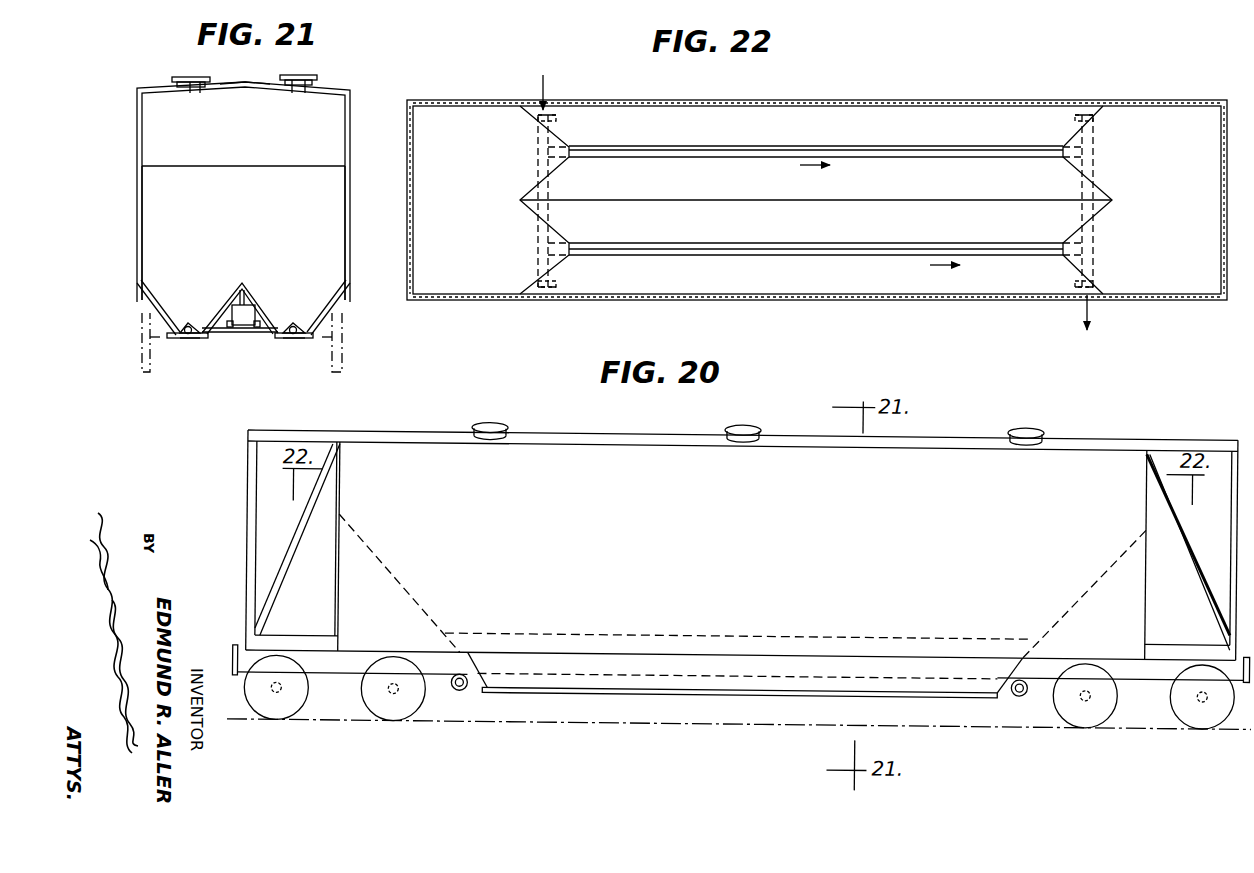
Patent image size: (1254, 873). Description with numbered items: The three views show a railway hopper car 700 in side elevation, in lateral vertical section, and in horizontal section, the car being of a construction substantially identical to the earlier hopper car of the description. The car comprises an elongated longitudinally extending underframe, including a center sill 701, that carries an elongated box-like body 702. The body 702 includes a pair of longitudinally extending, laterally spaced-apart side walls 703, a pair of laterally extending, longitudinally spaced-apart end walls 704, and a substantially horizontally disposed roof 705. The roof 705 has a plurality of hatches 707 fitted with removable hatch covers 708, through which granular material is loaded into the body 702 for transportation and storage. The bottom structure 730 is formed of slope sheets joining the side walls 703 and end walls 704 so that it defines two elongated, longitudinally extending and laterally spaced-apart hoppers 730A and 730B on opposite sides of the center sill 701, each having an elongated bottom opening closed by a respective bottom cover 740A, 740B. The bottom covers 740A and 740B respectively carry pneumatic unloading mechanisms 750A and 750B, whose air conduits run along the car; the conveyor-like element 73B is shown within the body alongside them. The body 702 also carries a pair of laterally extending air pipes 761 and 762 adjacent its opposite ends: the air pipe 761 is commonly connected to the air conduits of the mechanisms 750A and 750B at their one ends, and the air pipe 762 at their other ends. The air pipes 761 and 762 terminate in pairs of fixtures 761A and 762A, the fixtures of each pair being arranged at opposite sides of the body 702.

In FIG. 21, the railway hopper car 700 is at (400, 87).
In FIG. 22, the railway hopper car 700 is at (920, 92).
In FIG. 20, the railway hopper car 700 is at (1114, 407).
In FIG. 21, the center sill 701 is at (248, 335).
In FIG. 20, the center sill 701 is at (332, 667).
In FIG. 21, the body 702 is at (133, 197).
In FIG. 22, the body 702 is at (903, 306).
In FIG. 20, the body 702 is at (920, 460).
In FIG. 21, the side walls 703 is at (142, 226).
In FIG. 22, the side walls 703 is at (682, 102).
In FIG. 20, the side walls 703 is at (543, 442).
In FIG. 21, the end walls 704 is at (327, 147).
In FIG. 22, the end walls 704 is at (413, 200).
In FIG. 20, the end walls 704 is at (341, 591).
In FIG. 21, the roof 705 is at (250, 90).
In FIG. 21, the hatches 707 is at (197, 86).
In FIG. 21, the hatch covers 708 is at (190, 77).
In FIG. 22, the bottom structure 730 is at (655, 198).
In FIG. 21, the hopper 730A is at (188, 320).
In FIG. 22, the hopper 730A is at (765, 245).
In FIG. 21, the hopper 730B is at (293, 320).
In FIG. 22, the conveyor 73B is at (868, 150).
In FIG. 21, the bottom cover 740A is at (188, 340).
In FIG. 21, the bottom cover 740B is at (292, 340).
In FIG. 21, the pneumatic unloading mechanism 750A is at (177, 330).
In FIG. 20, the pneumatic unloading mechanism 750A is at (558, 677).
In FIG. 21, the pneumatic unloading mechanism 750B is at (316, 331).
In FIG. 22, the air pipe 761 is at (538, 246).
In FIG. 22, the fixtures 761A is at (556, 118).
In FIG. 20, the fixtures 761A is at (461, 688).
In FIG. 22, the air pipe 762 is at (1093, 243).
In FIG. 22, the fixtures 762A is at (1075, 120).
In FIG. 20, the fixtures 762A is at (1023, 689).